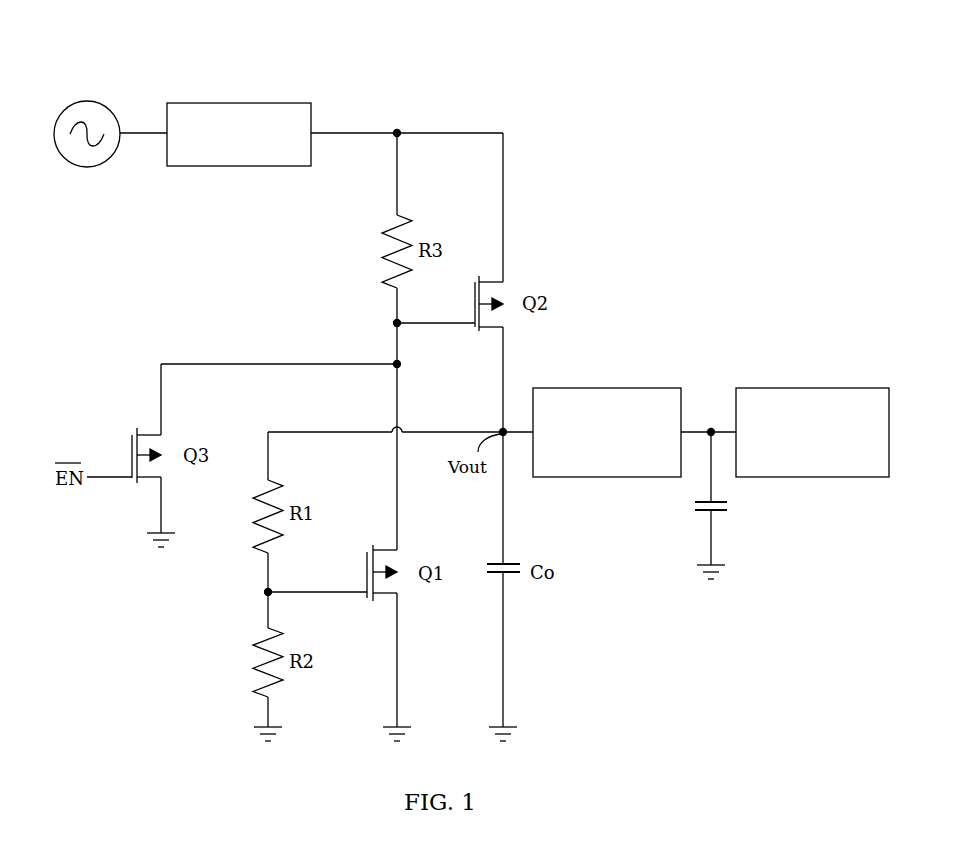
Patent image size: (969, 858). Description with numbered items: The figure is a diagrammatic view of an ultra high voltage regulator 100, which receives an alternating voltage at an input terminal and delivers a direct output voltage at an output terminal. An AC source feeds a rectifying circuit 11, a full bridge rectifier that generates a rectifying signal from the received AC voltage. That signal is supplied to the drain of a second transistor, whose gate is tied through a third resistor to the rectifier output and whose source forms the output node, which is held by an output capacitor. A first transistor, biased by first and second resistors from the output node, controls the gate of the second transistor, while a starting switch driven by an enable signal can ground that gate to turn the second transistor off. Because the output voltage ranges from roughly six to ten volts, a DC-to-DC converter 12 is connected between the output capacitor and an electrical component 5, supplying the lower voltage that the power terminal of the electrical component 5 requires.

The ultra high voltage regulator 100 is at (422, 33).
The rectifying circuit 11 is at (233, 103).
The DC-to-DC converter 12 is at (607, 388).
The electrical component 5 is at (772, 388).